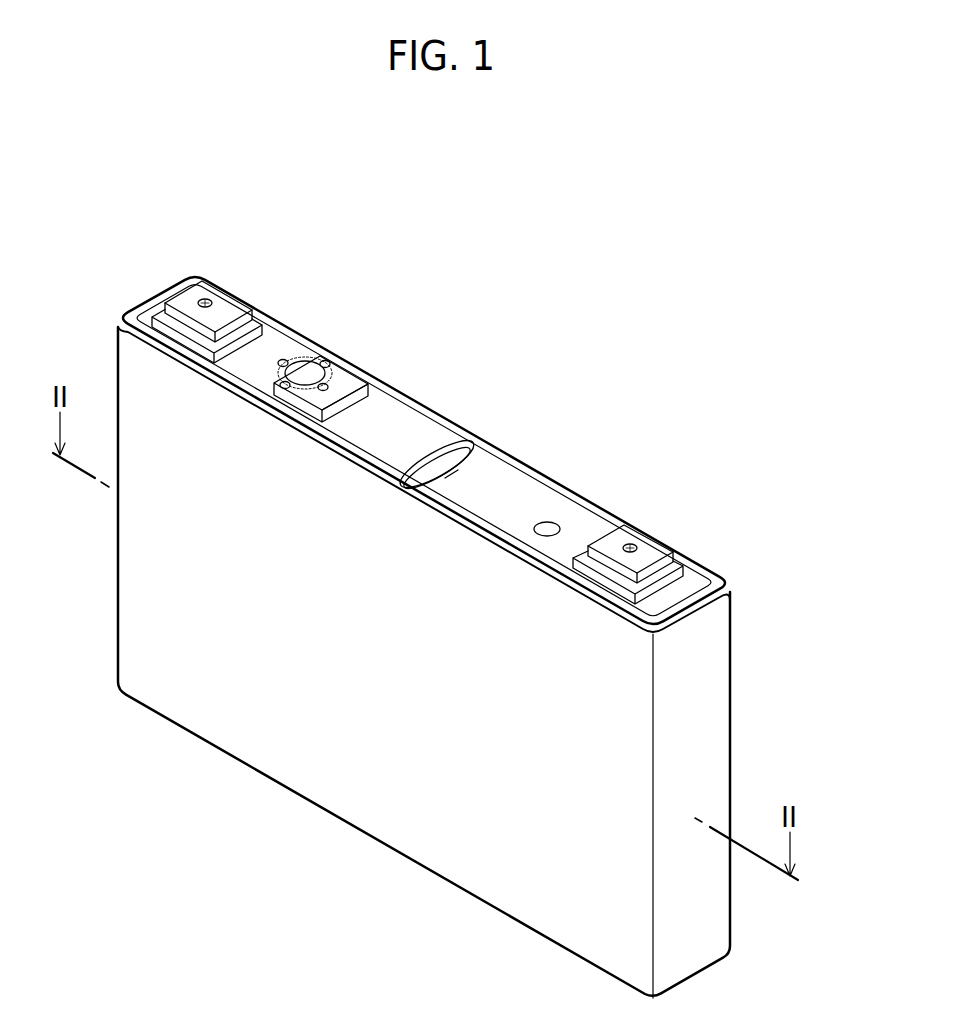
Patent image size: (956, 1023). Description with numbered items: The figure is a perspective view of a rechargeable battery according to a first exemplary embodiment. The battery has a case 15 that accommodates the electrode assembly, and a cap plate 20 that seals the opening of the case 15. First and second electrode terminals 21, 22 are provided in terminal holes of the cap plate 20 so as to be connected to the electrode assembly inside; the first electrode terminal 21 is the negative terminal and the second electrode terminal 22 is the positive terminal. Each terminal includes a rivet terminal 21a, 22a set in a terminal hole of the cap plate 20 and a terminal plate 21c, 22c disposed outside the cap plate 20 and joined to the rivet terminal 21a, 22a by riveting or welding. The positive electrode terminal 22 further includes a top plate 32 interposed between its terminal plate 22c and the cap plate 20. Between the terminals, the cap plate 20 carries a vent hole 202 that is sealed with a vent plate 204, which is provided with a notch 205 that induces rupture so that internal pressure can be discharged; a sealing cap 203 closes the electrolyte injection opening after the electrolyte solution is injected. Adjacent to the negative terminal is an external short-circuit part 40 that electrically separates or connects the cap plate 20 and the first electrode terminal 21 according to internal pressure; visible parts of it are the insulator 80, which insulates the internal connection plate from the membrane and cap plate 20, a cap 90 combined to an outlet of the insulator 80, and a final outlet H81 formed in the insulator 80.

The case 15 is at (352, 783).
The cap plate 20 is at (388, 420).
The first electrode terminal 21 is at (200, 277).
The rivet terminal 21a is at (205, 298).
The terminal plate 21c is at (234, 304).
The second electrode terminal 22 is at (688, 572).
The rivet terminal 22a is at (632, 547).
The terminal plate 22c is at (656, 570).
The top plate 32 is at (650, 591).
The external short-circuit part 40 is at (287, 323).
The insulator 80 is at (368, 386).
The final outlet H81 is at (350, 383).
The cap 90 is at (305, 372).
The vent hole 202 is at (423, 448).
The sealing cap 203 is at (547, 522).
The vent plate 204 is at (443, 462).
The notch 205 is at (449, 477).